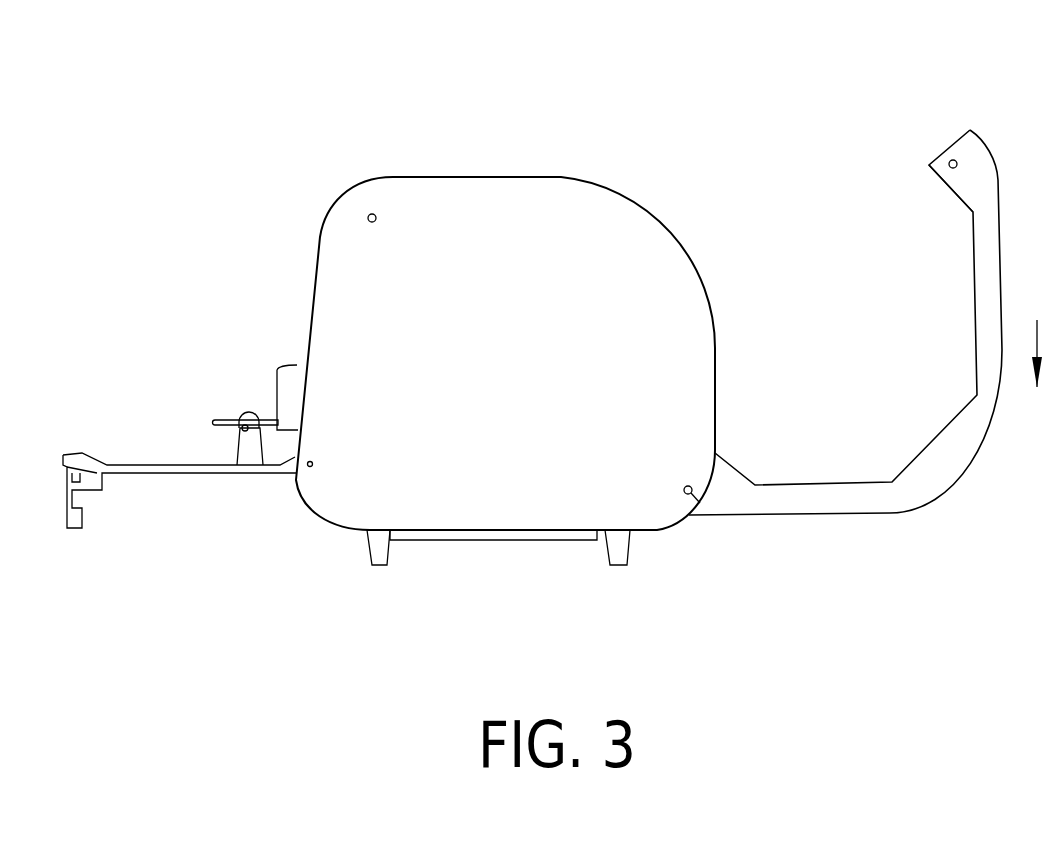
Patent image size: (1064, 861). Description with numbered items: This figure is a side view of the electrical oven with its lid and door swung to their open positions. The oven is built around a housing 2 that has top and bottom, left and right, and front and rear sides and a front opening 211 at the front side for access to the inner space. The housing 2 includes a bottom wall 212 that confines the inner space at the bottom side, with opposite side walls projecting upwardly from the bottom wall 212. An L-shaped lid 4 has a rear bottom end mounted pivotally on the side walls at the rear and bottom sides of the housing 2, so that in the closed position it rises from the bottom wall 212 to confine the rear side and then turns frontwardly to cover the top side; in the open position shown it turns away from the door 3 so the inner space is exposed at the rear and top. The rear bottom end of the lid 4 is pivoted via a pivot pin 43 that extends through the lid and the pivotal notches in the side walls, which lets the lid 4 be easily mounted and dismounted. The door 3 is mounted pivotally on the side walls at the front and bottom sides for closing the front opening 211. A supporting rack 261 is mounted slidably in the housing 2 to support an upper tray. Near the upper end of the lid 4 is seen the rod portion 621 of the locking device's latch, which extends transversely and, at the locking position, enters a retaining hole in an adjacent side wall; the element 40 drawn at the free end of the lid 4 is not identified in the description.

The housing 2 is at (463, 321).
The front opening 211 is at (313, 283).
The bottom wall 212 is at (487, 531).
The supporting rack 261 is at (215, 417).
The door 3 is at (180, 455).
The L-shaped lid 4 is at (845, 272).
The arm top end 40 is at (960, 147).
The pivot pin 43 is at (698, 513).
The rod portion 621 is at (952, 160).